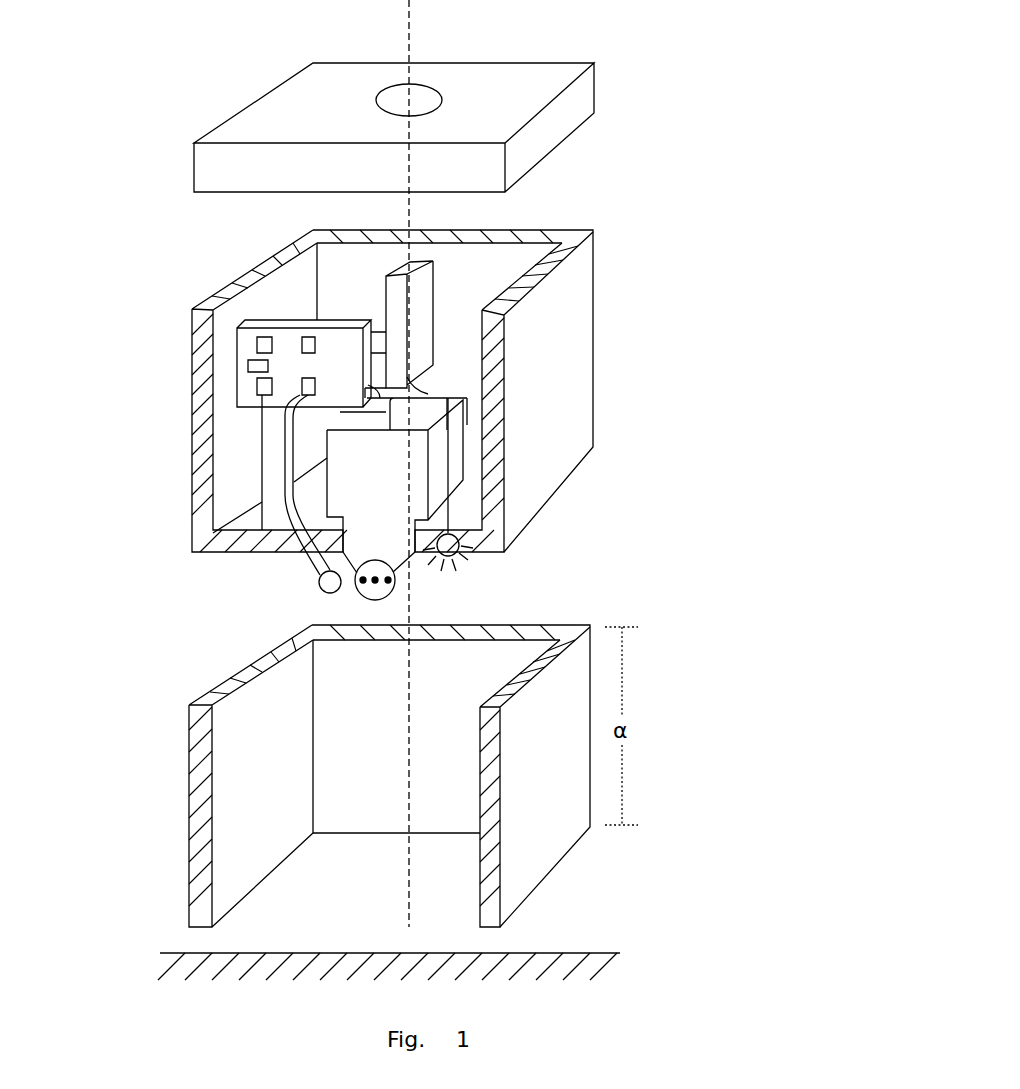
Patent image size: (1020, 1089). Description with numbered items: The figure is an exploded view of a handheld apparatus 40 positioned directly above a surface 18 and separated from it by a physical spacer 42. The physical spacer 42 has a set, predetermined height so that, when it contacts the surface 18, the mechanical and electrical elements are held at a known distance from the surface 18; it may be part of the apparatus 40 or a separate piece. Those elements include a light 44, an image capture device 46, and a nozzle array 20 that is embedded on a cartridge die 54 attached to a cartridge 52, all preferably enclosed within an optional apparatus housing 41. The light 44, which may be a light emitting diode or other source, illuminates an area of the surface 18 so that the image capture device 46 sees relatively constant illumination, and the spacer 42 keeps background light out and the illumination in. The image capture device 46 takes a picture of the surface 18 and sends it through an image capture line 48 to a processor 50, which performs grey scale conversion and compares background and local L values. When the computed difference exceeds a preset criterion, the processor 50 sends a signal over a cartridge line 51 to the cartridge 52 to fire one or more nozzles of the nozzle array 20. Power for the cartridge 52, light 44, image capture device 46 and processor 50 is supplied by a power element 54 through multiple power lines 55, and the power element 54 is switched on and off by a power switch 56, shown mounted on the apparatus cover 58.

The surface 18 is at (574, 954).
The nozzle array 20 is at (380, 592).
The handheld apparatus 40 is at (693, 62).
The apparatus housing 41 is at (593, 305).
The physical spacer 42 is at (190, 840).
The light 44 is at (462, 540).
The image capture device 46 is at (319, 592).
The image capture line 48 is at (283, 556).
The processor 50 is at (240, 390).
The cartridge line 51 is at (362, 403).
The cartridge 52 is at (413, 492).
The cartridge die 54 is at (398, 330).
The power lines 55 is at (447, 442).
The power switch 56 is at (425, 97).
The apparatus cover 58 is at (563, 115).